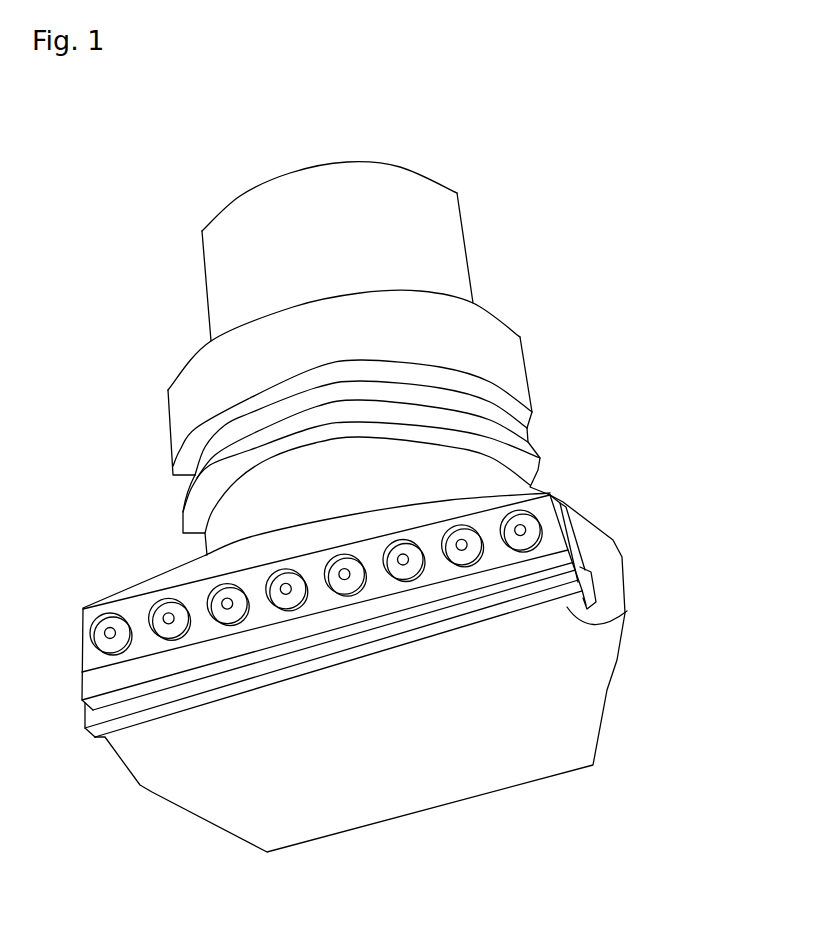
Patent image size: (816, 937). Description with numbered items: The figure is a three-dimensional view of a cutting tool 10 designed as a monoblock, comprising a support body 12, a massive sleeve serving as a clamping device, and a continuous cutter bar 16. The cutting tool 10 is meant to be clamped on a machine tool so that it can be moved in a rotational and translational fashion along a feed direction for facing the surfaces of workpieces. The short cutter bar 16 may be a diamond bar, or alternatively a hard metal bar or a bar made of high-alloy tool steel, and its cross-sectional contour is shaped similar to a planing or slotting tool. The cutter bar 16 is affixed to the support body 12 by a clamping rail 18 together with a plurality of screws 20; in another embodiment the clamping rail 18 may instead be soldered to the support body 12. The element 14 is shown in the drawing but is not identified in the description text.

The cutting tool 10 is at (565, 196).
The support body 12 is at (563, 692).
The flange 14 is at (493, 360).
The cutter bar 16 is at (627, 611).
The clamping rail 18 is at (560, 550).
The screws 20 is at (110, 620).